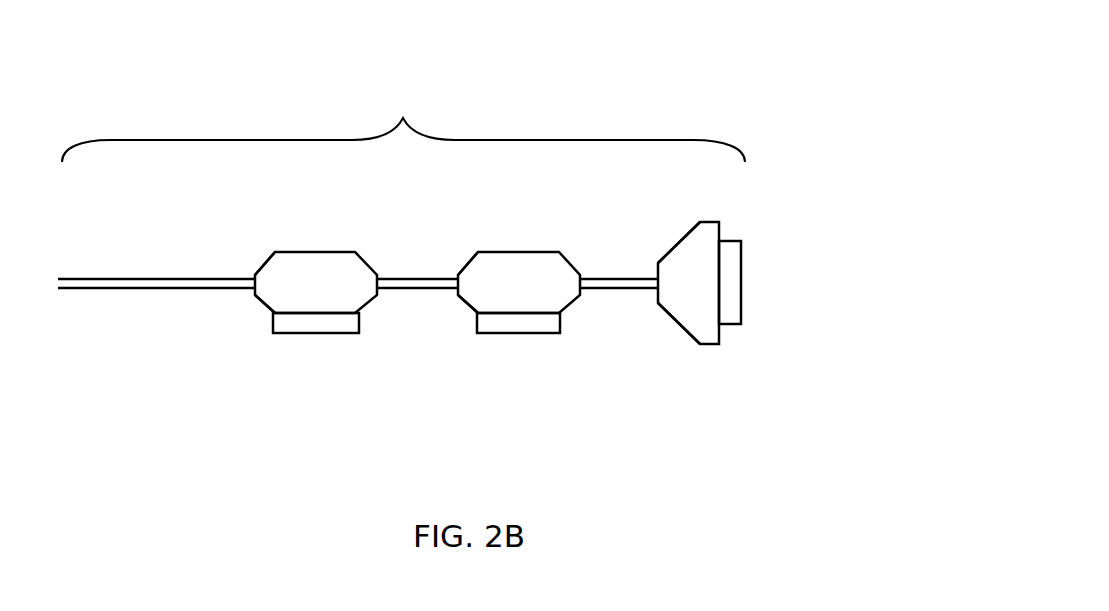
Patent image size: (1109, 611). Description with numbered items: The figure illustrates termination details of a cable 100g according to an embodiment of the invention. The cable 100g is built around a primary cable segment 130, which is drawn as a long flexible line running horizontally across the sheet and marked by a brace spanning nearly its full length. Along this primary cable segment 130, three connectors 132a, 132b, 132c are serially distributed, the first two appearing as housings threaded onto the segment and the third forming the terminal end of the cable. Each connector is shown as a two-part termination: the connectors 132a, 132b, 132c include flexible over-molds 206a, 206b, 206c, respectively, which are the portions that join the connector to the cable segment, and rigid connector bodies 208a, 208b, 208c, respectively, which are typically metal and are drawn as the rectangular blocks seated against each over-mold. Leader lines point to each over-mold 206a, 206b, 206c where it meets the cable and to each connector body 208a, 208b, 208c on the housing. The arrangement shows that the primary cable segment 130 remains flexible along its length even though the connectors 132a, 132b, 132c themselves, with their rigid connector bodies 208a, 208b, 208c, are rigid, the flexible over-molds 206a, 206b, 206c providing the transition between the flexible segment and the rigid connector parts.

The cable 100g is at (765, 111).
The primary cable segment 130 is at (403, 124).
The connector 132a is at (245, 344).
The connector 132b is at (478, 363).
The connector 132c is at (676, 351).
The flexible over-mold 206a is at (258, 301).
The flexible over-mold 206b is at (477, 318).
The flexible over-mold 206c is at (672, 318).
The rigid connector body 208a is at (337, 333).
The rigid connector body 208b is at (510, 333).
The rigid connector body 208c is at (741, 293).